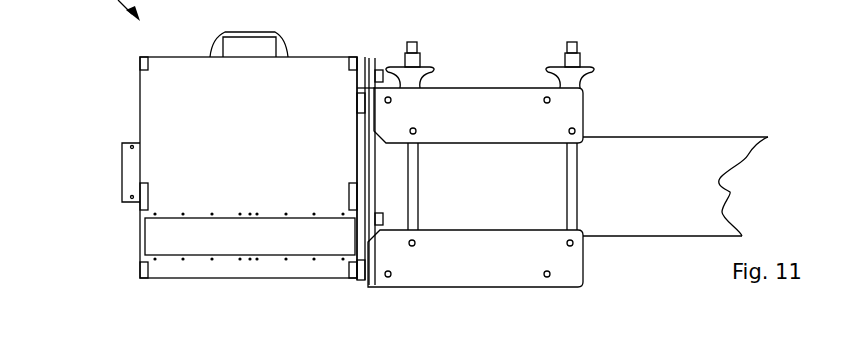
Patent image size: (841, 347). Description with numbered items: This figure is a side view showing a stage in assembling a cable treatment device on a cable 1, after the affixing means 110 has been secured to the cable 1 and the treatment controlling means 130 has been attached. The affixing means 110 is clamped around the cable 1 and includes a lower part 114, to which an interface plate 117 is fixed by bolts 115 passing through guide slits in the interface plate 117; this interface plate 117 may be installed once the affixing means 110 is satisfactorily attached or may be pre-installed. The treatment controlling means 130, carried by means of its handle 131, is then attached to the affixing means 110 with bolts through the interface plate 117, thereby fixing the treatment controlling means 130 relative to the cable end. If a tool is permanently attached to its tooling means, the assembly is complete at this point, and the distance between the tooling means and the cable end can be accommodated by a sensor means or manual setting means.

The cable 1 is at (696, 160).
The affixing means 110 is at (545, 173).
The lower part 114 is at (600, 45).
The bolts 115 is at (357, 273).
The interface plate 117 is at (375, 170).
The treatment controlling means 130 is at (126, 346).
The handle 131 is at (232, 33).